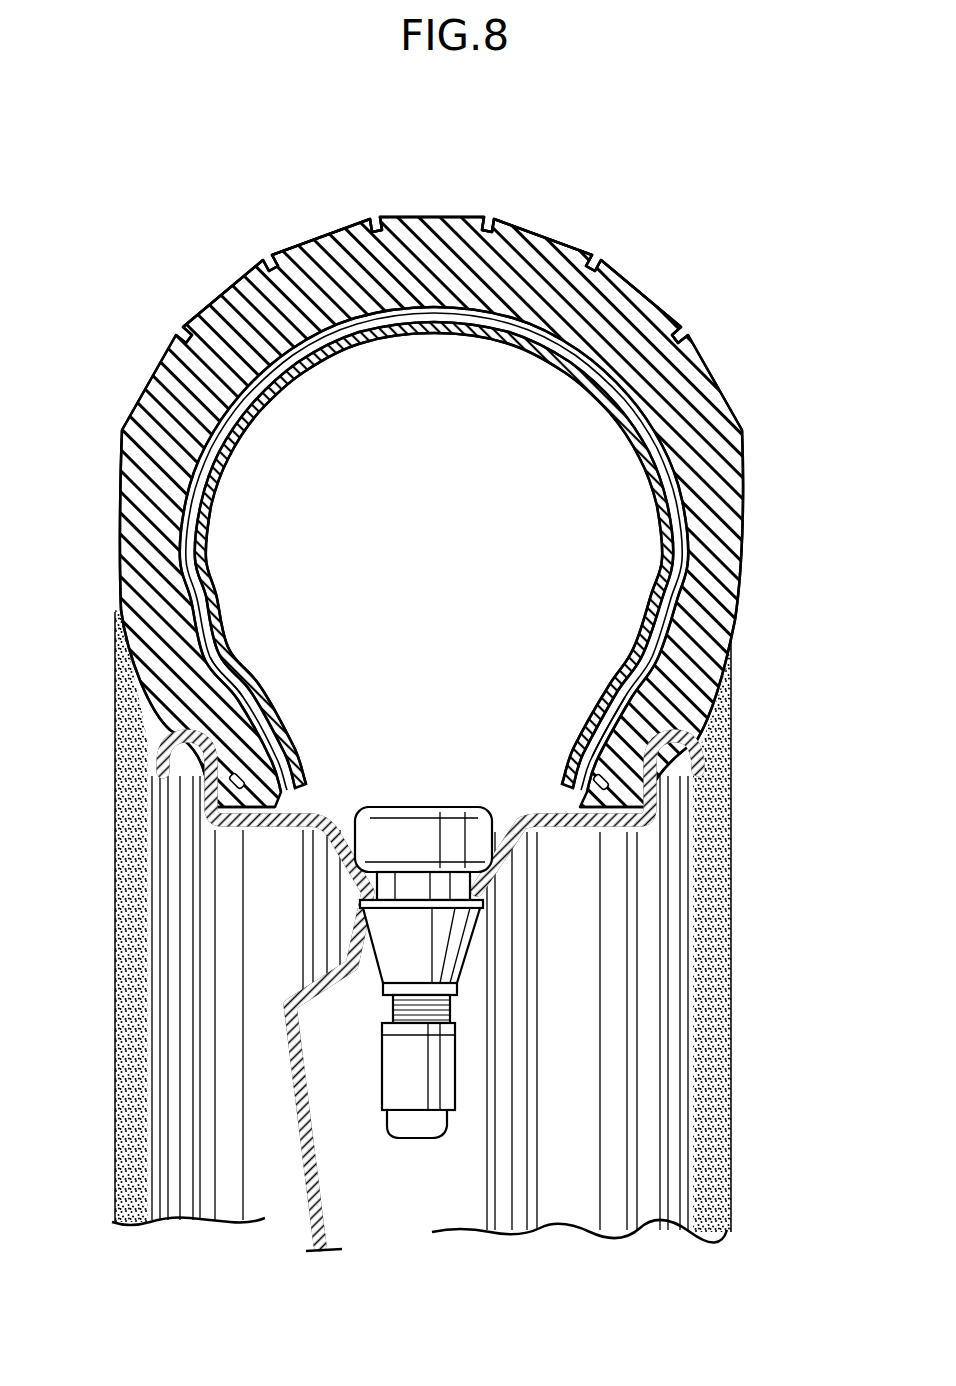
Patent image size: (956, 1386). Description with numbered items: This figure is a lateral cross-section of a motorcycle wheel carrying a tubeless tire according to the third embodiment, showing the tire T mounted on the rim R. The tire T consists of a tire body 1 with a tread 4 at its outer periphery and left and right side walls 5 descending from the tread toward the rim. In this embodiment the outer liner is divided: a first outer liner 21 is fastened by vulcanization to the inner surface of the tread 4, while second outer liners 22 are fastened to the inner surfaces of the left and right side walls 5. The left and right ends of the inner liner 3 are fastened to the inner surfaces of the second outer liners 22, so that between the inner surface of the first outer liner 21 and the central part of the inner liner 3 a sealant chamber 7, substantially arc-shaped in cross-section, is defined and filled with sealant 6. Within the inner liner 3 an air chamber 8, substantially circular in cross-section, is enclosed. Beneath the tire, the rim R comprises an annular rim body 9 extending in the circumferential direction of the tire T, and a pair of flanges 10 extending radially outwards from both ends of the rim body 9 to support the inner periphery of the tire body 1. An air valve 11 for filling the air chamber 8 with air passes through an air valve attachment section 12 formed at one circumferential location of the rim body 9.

The tire body 1 is at (551, 230).
The inner liner 3 is at (332, 347).
The tread 4 is at (302, 250).
The side walls 5 is at (140, 612).
The sealant 6 is at (228, 420).
The sealant chamber 7 is at (597, 380).
The air chamber 8 is at (439, 589).
The rim body 9 is at (262, 827).
The flanges 10 is at (150, 710).
The air valve 11 is at (376, 981).
The air valve attachment section 12 is at (510, 860).
The first outer liner 21 is at (512, 340).
The second outer liners 22 is at (222, 665).
The tire T is at (718, 324).
The rim R is at (695, 1052).